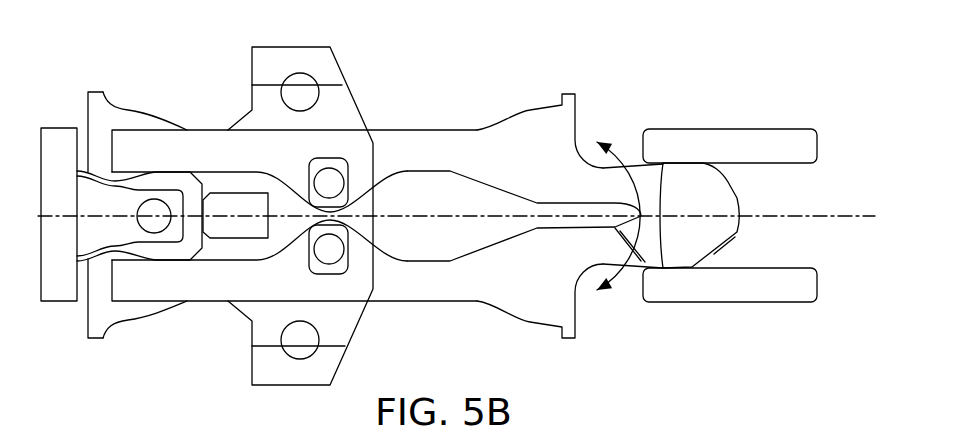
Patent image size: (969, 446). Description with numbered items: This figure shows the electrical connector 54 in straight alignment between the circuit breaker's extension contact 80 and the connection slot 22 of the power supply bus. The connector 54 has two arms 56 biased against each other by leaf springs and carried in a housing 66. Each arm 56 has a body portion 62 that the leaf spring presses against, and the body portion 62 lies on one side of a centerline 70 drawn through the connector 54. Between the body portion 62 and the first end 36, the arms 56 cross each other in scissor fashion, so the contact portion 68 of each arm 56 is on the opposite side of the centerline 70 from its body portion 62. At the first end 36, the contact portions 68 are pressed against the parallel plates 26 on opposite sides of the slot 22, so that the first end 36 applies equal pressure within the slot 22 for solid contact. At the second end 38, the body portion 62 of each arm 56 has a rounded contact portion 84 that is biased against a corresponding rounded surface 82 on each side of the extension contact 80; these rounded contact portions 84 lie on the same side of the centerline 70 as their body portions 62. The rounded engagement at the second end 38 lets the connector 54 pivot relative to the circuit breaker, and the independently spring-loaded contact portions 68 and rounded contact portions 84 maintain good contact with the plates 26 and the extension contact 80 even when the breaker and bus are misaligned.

The connection slot 22 is at (772, 182).
The parallel plates 26 is at (754, 142).
The first end 36 is at (744, 254).
The second end 38 is at (129, 347).
The connector 54 is at (444, 64).
The arms 56 is at (404, 128).
The body portion 62 is at (468, 138).
The housing 66 is at (342, 57).
The contact portion 68 is at (678, 162).
The centerline 70 is at (867, 213).
The extension contact 80 is at (88, 207).
The rounded surface 82 is at (78, 172).
The rounded contact portion 84 is at (101, 172).